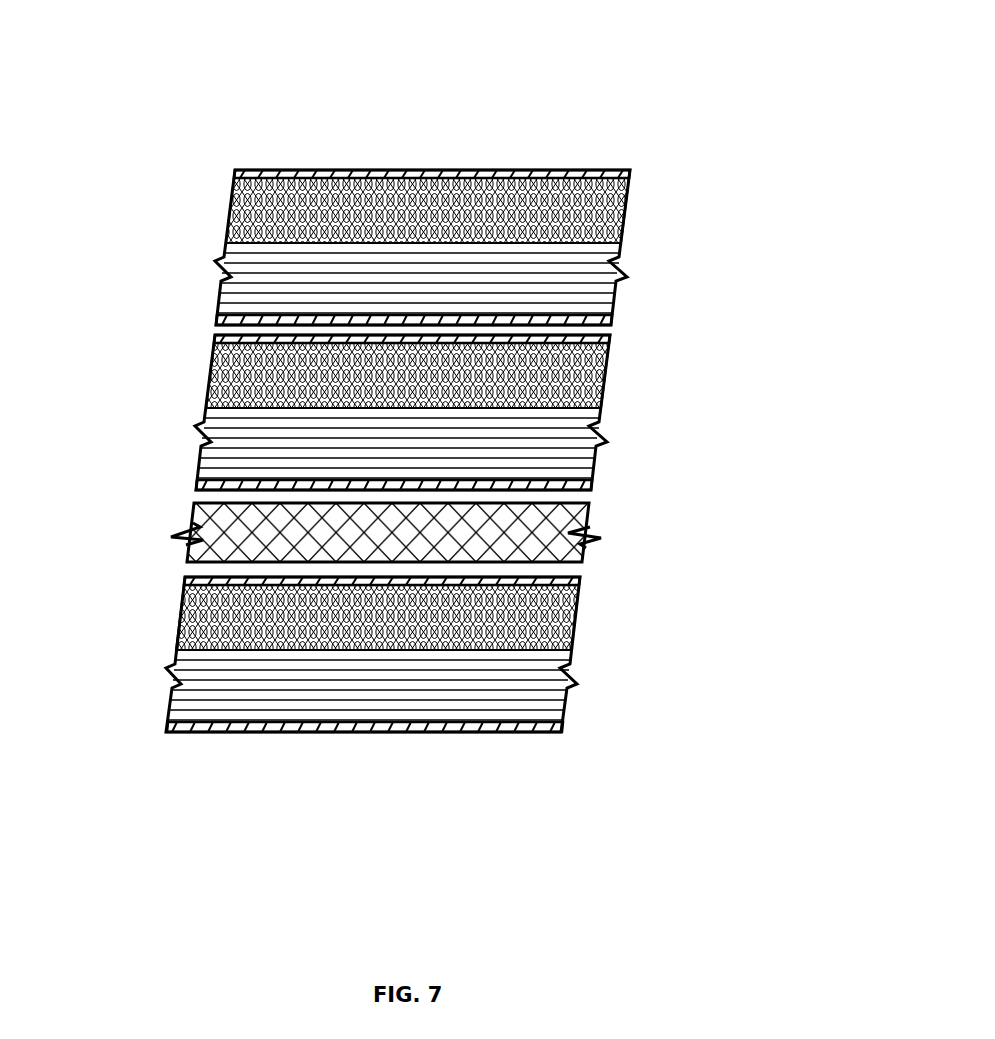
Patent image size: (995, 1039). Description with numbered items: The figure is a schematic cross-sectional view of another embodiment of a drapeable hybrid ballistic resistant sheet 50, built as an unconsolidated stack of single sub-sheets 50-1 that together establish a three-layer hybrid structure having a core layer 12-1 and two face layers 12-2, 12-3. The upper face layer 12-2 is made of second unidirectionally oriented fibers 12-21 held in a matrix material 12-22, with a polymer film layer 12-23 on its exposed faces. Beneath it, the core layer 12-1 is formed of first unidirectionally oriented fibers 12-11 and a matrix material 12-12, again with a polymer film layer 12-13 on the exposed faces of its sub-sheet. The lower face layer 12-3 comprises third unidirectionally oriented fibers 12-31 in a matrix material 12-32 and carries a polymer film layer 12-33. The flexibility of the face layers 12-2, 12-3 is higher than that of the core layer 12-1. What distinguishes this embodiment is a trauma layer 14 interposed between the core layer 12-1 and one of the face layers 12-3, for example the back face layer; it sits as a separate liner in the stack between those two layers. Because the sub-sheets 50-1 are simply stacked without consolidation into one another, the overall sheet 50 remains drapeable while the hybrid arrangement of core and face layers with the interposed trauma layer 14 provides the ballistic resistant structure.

The drapeable ballistic resistant sheet 50 is at (440, 45).
The sub-sheet 50-1 is at (690, 258).
The core layer 12-1 is at (203, 340).
The face layer 12-2 is at (230, 175).
The face layer 12-3 is at (183, 578).
The first unidirectionally oriented fibers 12-11 is at (567, 360).
The matrix material 12-12 is at (600, 398).
The polymer film layer 12-13 is at (597, 334).
The second unidirectionally oriented fibers 12-21 is at (273, 193).
The matrix material 12-22 is at (312, 203).
The polymer film layer 12-23 is at (250, 171).
The third unidirectionally oriented fibers 12-31 is at (225, 640).
The matrix material 12-32 is at (264, 637).
The polymer film layer 12-33 is at (555, 732).
The trauma layer 14 is at (202, 525).